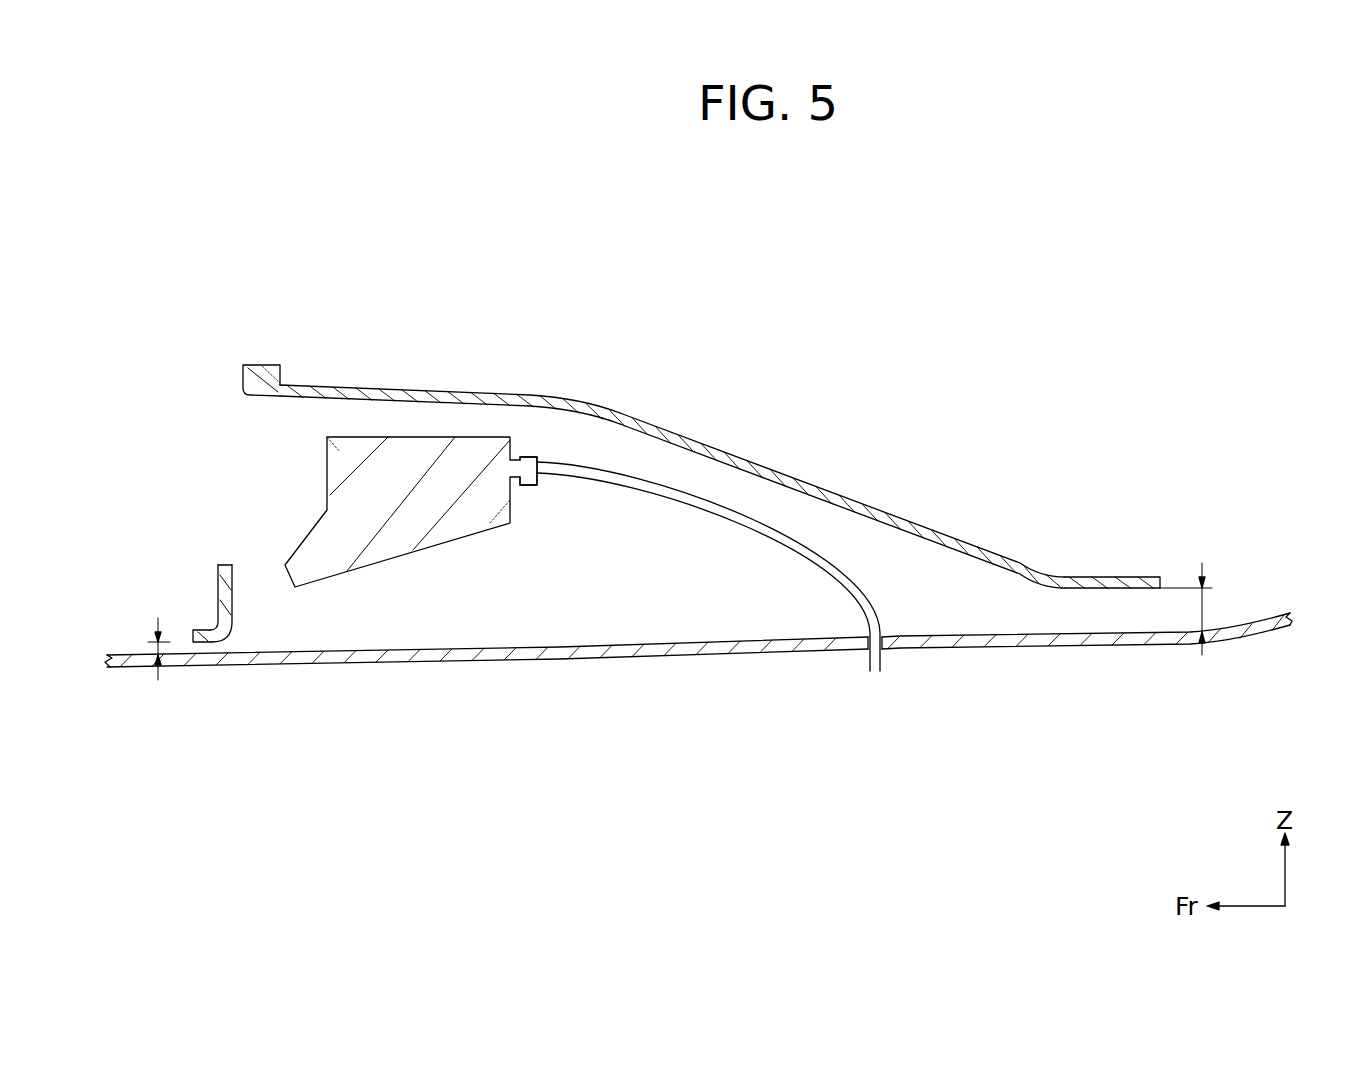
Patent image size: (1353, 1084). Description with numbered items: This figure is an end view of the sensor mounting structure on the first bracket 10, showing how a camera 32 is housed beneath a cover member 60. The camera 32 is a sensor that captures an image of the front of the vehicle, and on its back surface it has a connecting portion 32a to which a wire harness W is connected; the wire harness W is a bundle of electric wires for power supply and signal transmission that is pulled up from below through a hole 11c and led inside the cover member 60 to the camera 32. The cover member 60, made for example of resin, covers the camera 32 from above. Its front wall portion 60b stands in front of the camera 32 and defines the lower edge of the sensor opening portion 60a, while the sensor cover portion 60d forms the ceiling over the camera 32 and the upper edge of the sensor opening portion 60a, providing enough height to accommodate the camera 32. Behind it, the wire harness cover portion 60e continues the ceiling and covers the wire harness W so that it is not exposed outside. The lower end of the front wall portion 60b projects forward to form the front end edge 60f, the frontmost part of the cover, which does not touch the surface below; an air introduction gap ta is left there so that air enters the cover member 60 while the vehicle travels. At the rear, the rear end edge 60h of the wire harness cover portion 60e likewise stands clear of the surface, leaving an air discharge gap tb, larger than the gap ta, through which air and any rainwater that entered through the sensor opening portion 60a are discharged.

The cover member 60 is at (196, 263).
The sensor opening portion 60a is at (248, 396).
The front wall portion 60b is at (217, 588).
The sensor cover portion 60d is at (567, 341).
The wire harness cover portion 60e is at (1160, 341).
The front end edge 60f is at (190, 637).
The rear end edge 60h is at (1165, 578).
The camera 32 is at (326, 473).
The connecting portion 32a is at (526, 488).
The wire harness W is at (694, 501).
The first bracket 10 is at (632, 659).
The through hole 11c is at (868, 665).
The air introduction gap ta is at (145, 649).
The air discharge gap tb is at (1198, 609).